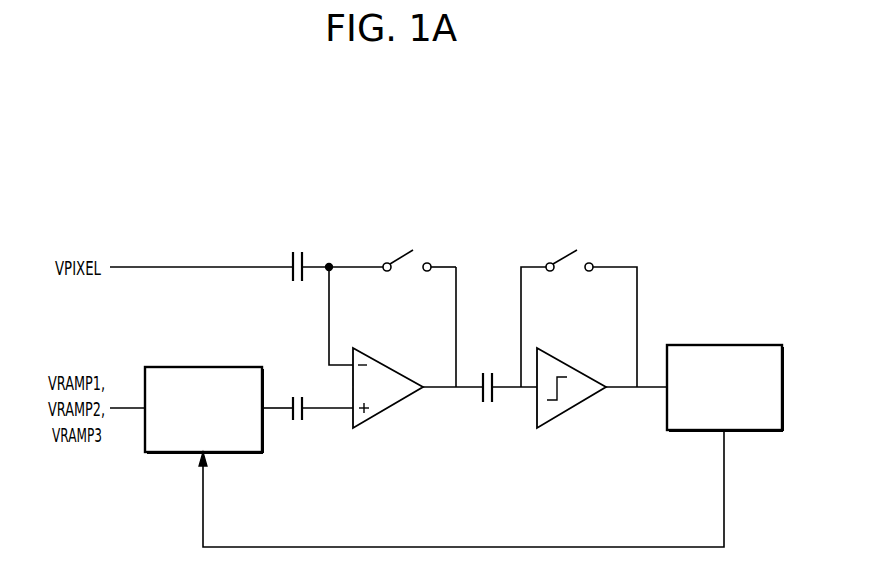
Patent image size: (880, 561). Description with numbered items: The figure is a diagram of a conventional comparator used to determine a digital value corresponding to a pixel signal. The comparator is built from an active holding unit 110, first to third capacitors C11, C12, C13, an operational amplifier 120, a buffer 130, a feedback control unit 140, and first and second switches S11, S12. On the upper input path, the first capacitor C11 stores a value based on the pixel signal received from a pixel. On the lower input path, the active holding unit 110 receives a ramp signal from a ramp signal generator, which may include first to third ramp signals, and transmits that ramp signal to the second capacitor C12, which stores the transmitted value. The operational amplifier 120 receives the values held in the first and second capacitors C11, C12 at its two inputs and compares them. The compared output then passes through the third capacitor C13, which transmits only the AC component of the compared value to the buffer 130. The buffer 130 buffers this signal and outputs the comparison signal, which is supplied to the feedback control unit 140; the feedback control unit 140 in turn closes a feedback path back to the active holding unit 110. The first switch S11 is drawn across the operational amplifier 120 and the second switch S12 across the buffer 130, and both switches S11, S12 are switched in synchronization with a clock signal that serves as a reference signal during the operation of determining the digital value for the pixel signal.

The active holding unit 110 is at (220, 366).
The operational amplifier 120 is at (392, 367).
The buffer 130 is at (578, 367).
The feedback control unit 140 is at (748, 345).
The first capacitor C11 is at (296, 250).
The second capacitor C12 is at (297, 391).
The third capacitor C13 is at (486, 371).
The first switch S11 is at (407, 245).
The second switch S12 is at (569, 245).